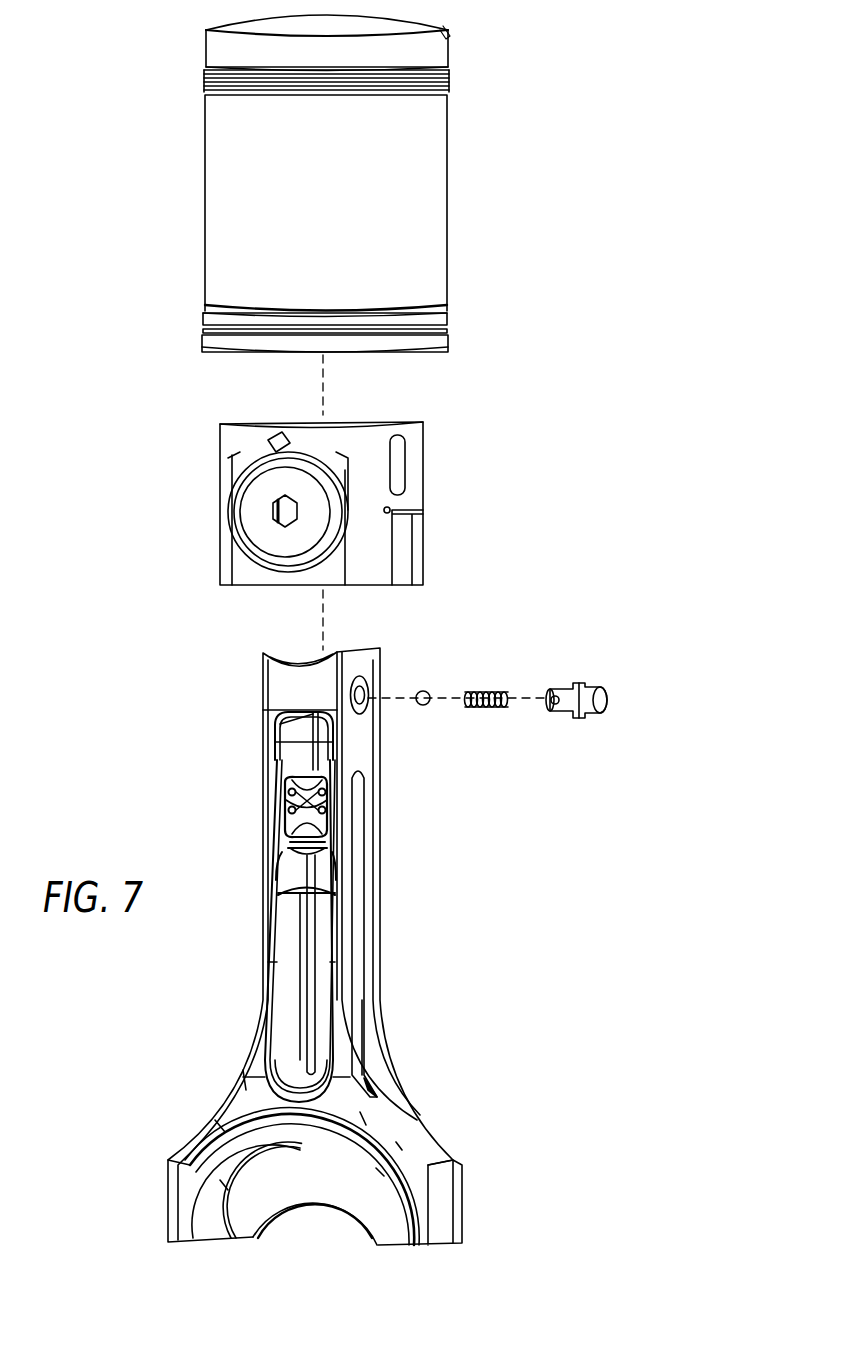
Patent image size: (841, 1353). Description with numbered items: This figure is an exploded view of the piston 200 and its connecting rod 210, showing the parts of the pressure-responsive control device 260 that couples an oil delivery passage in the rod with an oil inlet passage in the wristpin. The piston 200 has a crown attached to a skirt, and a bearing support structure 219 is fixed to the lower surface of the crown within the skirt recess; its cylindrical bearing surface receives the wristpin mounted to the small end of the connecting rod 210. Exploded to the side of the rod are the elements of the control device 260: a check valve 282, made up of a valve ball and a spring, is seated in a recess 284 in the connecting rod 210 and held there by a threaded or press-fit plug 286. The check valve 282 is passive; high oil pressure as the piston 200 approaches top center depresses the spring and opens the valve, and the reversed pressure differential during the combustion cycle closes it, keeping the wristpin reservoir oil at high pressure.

The piston 200 is at (476, 178).
The bearing support structure 219 is at (462, 506).
The connecting rod 210 is at (411, 927).
The pressure-responsive control device 260 is at (551, 667).
The check valve 282 is at (510, 712).
The recess 284 is at (363, 690).
The plug 286 is at (607, 703).